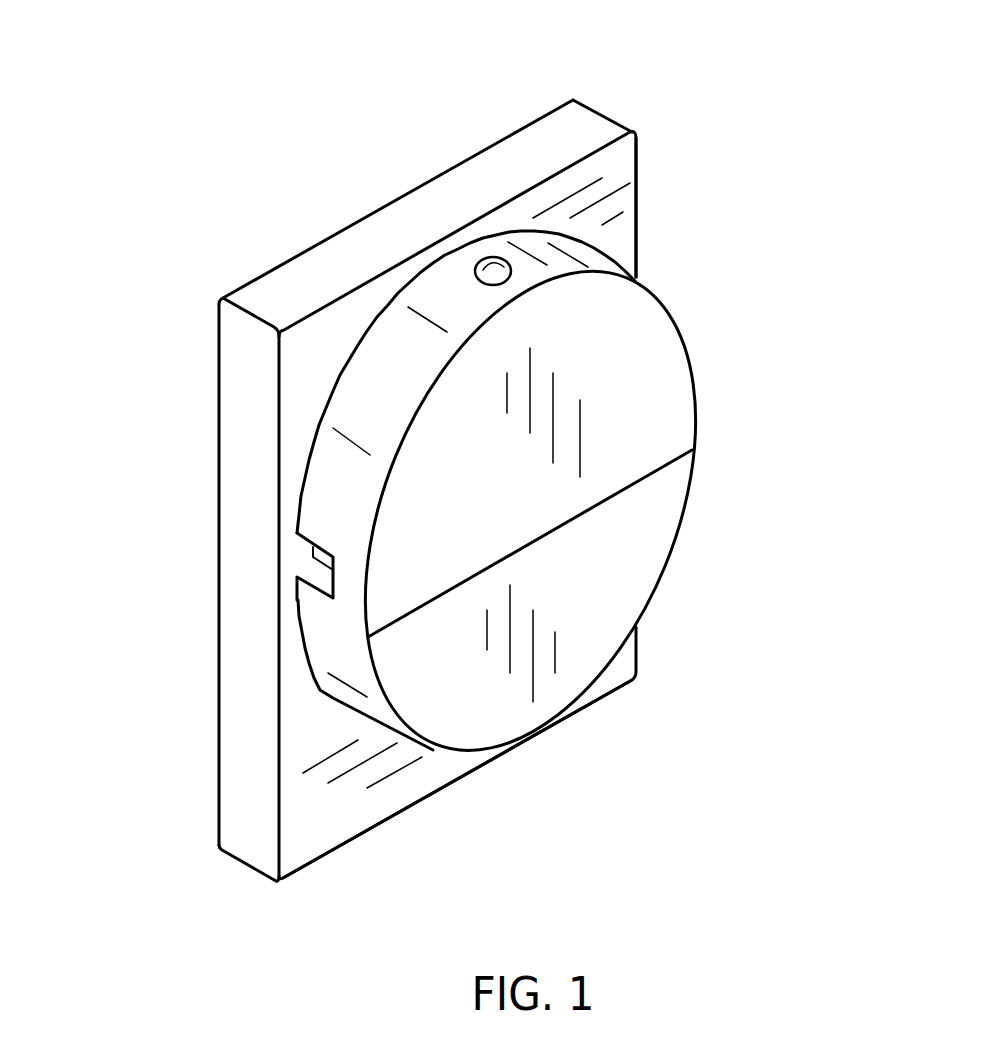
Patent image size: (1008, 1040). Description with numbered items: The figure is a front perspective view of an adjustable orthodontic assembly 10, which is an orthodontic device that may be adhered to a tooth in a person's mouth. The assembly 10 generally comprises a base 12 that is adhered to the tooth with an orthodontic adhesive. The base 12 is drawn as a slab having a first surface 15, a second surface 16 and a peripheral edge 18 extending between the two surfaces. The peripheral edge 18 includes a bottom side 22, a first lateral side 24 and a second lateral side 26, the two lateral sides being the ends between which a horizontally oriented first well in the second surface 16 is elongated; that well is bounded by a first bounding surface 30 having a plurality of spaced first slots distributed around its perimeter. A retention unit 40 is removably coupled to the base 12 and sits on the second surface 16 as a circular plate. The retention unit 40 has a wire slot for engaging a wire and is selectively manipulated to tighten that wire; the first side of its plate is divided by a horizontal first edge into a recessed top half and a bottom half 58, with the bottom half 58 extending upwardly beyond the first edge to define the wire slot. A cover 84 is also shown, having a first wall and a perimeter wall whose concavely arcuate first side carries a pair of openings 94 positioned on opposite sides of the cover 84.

The adjustable orthodontic assembly 10 is at (282, 86).
The base 12 is at (588, 101).
The first surface 15 is at (217, 431).
The second surface 16 is at (310, 350).
The peripheral edge 18 is at (512, 147).
The bottom side 22 is at (436, 794).
The first lateral side 24 is at (217, 763).
The second lateral side 26 is at (637, 197).
The first bounding surface 30 is at (272, 268).
The retention unit 40 is at (728, 404).
The bottom half 58 is at (630, 577).
The cover 84 is at (653, 328).
The openings 94 is at (286, 557).